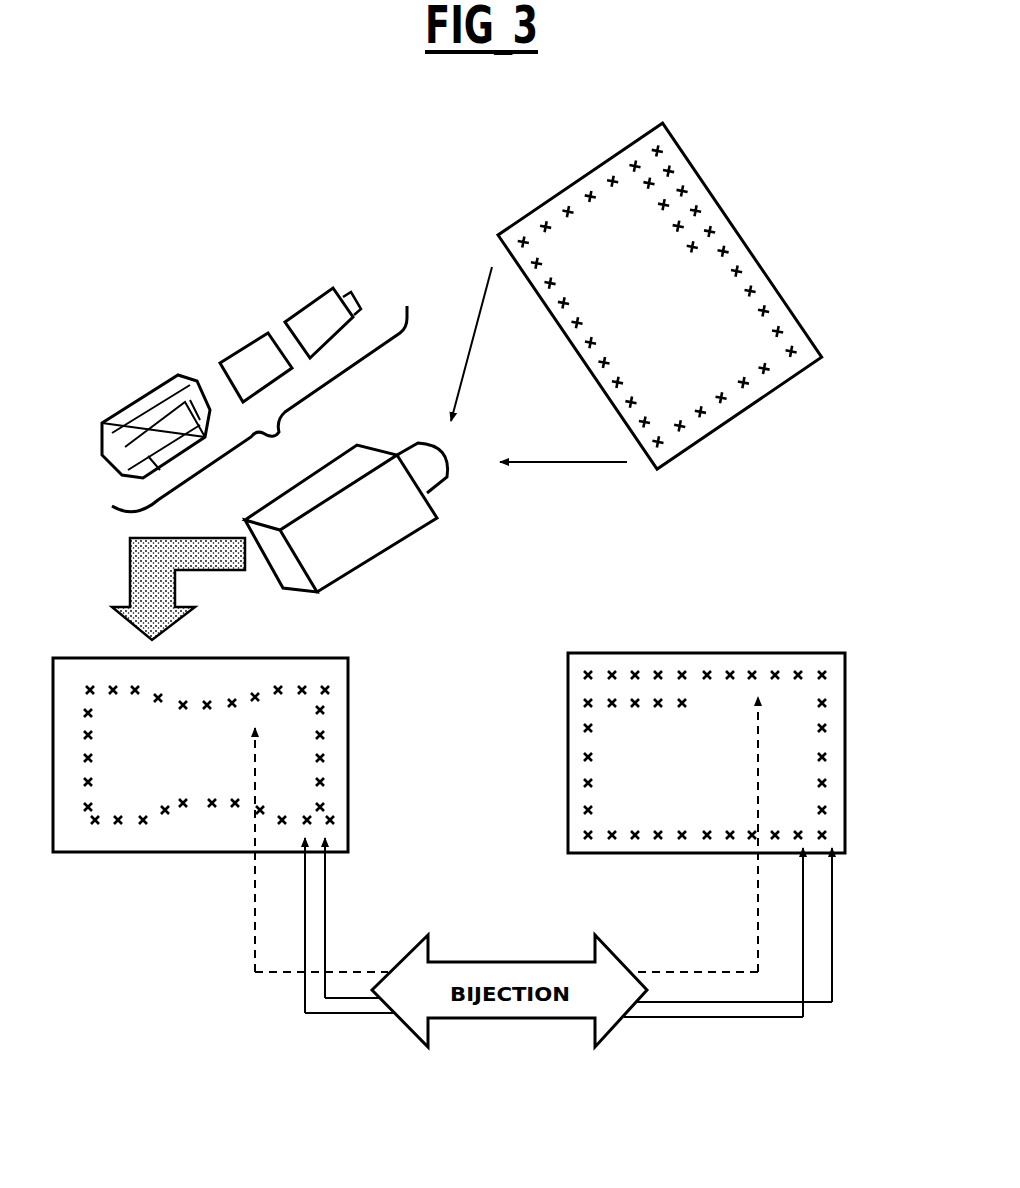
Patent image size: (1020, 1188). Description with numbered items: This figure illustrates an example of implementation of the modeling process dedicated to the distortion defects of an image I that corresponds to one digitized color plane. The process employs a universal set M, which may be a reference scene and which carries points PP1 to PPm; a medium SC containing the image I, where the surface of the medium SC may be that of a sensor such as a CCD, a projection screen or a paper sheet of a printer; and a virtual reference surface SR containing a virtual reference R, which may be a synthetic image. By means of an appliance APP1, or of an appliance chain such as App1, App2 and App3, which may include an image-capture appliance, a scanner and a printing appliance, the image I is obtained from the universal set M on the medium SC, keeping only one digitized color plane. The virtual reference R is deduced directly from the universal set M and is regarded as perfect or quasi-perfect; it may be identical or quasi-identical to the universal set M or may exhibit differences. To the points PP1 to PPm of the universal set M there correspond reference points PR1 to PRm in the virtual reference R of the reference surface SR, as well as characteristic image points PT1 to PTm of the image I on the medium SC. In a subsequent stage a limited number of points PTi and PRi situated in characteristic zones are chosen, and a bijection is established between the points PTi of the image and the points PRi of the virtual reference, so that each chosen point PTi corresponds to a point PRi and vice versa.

The universal set M is at (535, 207).
The point of universal set PP1 is at (660, 150).
The point of universal set PPm is at (658, 447).
The appliance of appliance chain App1 is at (313, 320).
The appliance of appliance chain App2 is at (240, 365).
The appliance of appliance chain App3 is at (154, 426).
The appliance APP1 is at (346, 517).
The medium SC is at (355, 773).
The image I is at (292, 756).
The characteristic image point PT1 is at (90, 688).
The chosen point of the image PTi is at (255, 690).
The characteristic image point PTm is at (340, 818).
The virtual reference surface SR is at (852, 760).
The virtual reference R is at (797, 712).
The reference point PR1 is at (588, 670).
The chosen point of the virtual reference PRi is at (757, 672).
The reference point PRm is at (828, 833).